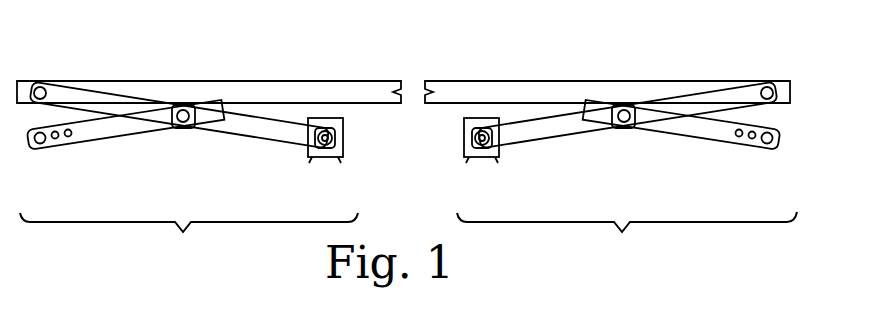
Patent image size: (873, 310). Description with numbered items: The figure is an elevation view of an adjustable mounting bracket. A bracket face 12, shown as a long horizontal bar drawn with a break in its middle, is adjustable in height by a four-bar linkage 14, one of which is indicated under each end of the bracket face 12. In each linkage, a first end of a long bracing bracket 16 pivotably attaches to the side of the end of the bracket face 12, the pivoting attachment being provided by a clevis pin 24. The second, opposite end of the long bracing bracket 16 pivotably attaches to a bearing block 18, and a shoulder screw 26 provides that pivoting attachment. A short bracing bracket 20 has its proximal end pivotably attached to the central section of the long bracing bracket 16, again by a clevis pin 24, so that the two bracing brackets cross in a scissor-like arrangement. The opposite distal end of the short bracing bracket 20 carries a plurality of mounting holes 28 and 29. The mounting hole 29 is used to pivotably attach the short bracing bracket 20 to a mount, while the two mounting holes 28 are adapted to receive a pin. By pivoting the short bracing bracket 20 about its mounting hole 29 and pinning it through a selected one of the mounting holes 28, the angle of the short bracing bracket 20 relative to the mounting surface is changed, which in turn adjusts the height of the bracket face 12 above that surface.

The bracket face 12 is at (268, 80).
The four-bar linkage 14 is at (408, 240).
The long bracing bracket 16 is at (117, 102).
The bearing block 18 is at (332, 158).
The short bracing bracket 20 is at (702, 125).
The clevis pin 24 is at (40, 87).
The shoulder screw 26 is at (320, 146).
The mounting holes 28 is at (68, 138).
The mounting hole 29 is at (38, 145).